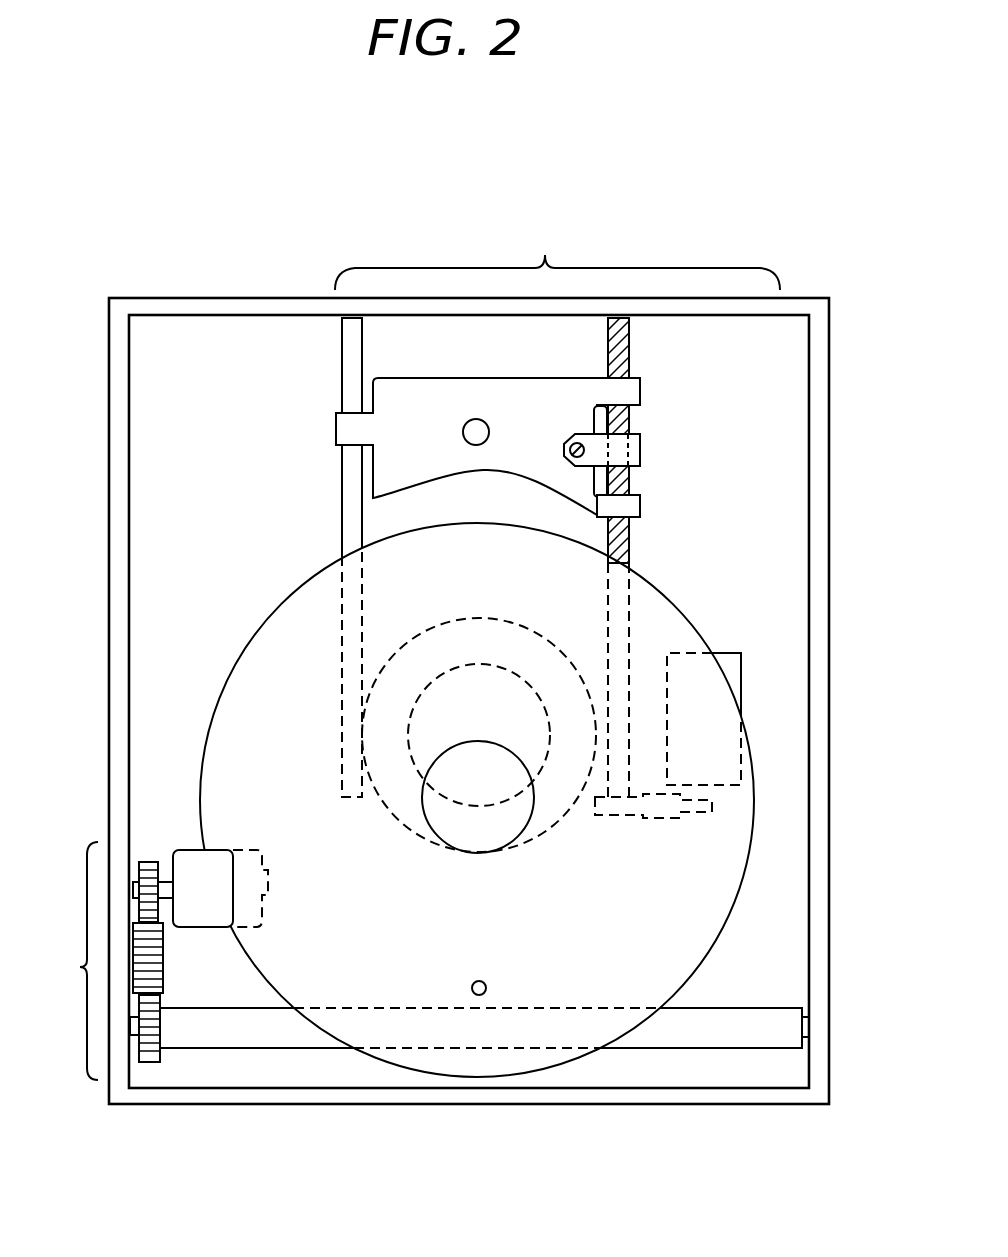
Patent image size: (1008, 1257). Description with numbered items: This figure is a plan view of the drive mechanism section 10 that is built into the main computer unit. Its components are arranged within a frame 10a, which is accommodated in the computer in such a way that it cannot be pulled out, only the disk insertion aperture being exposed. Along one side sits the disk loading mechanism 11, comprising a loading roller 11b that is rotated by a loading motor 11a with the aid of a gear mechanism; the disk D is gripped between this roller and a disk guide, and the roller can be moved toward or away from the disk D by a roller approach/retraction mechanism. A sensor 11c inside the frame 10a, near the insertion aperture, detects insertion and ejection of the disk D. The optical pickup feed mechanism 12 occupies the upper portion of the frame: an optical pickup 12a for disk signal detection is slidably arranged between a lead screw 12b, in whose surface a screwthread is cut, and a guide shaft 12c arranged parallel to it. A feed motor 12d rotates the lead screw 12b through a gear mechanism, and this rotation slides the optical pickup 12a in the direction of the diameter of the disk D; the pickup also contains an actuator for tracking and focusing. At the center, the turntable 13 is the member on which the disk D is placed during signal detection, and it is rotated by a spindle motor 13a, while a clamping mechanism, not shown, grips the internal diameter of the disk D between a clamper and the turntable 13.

The drive mechanism section 10 is at (86, 283).
The frame 10a is at (109, 417).
The disk loading mechanism 11 is at (114, 961).
The loading motor 11a is at (190, 858).
The loading roller 11b is at (207, 1035).
The sensor 11c is at (483, 982).
The optical pickup feed mechanism 12 is at (557, 258).
The optical pickup 12a is at (430, 398).
The lead screw 12b is at (620, 365).
The guide shaft 12c is at (352, 495).
The feed motor 12d is at (729, 653).
The turntable 13 is at (493, 617).
The spindle motor 13a is at (445, 673).
The disk D is at (735, 855).